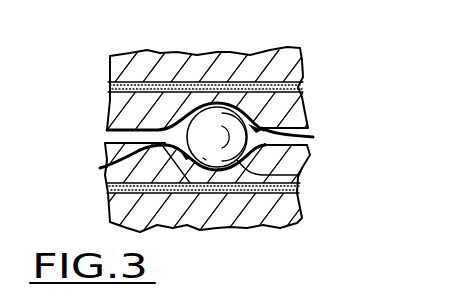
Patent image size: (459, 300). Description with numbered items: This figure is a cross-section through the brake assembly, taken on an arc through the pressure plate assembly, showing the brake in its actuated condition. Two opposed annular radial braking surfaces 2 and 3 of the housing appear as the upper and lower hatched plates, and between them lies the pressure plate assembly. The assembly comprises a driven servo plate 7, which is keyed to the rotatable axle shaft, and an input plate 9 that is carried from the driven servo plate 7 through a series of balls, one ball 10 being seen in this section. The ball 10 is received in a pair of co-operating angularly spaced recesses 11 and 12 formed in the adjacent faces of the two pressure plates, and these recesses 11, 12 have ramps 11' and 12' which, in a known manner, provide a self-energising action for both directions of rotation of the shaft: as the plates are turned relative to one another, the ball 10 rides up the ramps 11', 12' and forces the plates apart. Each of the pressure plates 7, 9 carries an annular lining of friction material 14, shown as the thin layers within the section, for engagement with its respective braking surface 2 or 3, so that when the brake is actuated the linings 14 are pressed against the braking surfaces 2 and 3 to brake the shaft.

The braking surface 2 is at (130, 80).
The braking surface 3 is at (219, 197).
The driven servo plate 7 is at (130, 103).
The input plate 9 is at (108, 165).
The ball 10 is at (205, 125).
The recess 11 is at (317, 121).
The ramp 11' is at (197, 67).
The recess 12 is at (184, 180).
The ramp 12' is at (303, 175).
The annular lining of friction material 14 is at (300, 88).